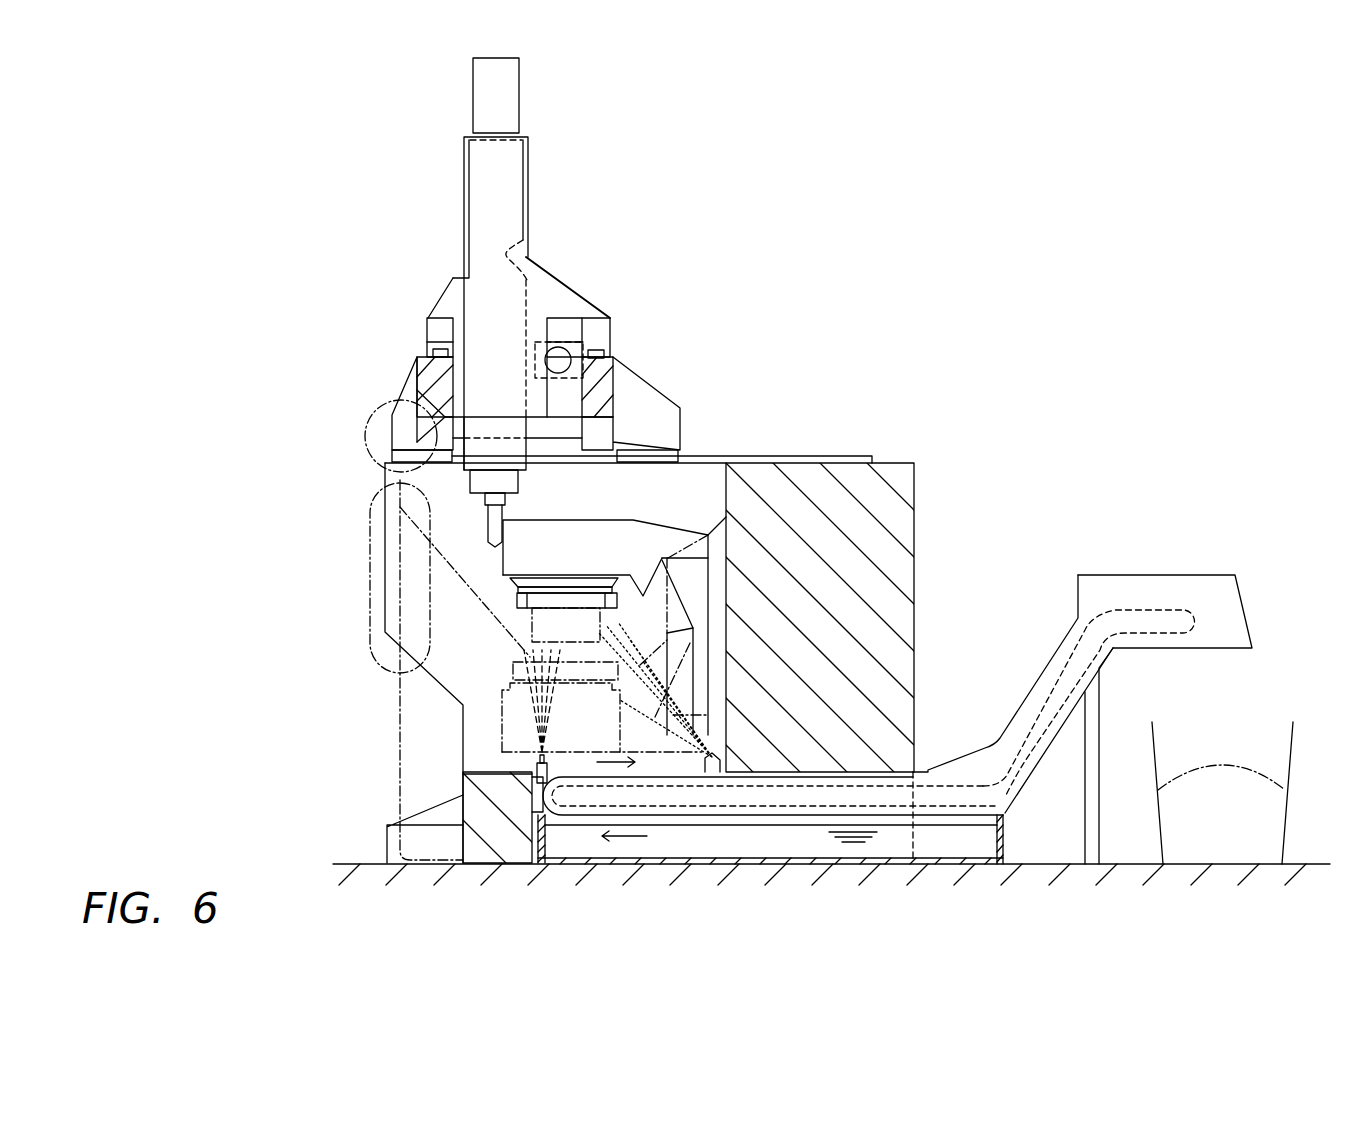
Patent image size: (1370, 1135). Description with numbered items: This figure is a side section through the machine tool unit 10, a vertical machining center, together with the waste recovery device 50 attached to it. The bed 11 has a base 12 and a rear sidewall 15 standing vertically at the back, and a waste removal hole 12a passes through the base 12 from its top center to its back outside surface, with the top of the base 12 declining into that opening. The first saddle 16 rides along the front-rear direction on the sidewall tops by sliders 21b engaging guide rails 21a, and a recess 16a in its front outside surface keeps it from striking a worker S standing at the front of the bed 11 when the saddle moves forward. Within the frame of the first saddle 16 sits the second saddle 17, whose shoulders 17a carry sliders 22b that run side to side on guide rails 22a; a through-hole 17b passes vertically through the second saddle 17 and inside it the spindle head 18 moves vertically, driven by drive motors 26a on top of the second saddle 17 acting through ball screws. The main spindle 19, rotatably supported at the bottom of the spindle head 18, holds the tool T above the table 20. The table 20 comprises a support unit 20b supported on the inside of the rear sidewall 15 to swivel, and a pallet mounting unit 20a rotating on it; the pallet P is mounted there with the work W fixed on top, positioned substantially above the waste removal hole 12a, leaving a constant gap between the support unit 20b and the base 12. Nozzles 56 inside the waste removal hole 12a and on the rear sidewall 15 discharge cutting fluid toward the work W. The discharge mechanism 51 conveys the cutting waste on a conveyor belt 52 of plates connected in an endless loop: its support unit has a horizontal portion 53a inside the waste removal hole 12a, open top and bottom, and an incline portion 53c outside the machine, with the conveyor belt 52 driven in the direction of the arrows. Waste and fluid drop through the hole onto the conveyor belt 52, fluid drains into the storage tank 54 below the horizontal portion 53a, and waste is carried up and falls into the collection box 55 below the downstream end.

The machine tool unit 10 is at (957, 420).
The bed 11 is at (352, 807).
The base 12 is at (468, 847).
The waste removal hole 12a is at (540, 800).
The rear sidewall 15 is at (893, 472).
The first saddle 16 is at (647, 388).
The recess 16a is at (418, 397).
The second saddle 17 is at (513, 192).
The shoulder 17a is at (448, 297).
The through-hole 17b is at (530, 241).
The spindle head 18 is at (528, 165).
The main spindle 19 is at (513, 480).
The table 20 is at (682, 490).
The pallet mounting unit 20a is at (525, 587).
The support unit 20b is at (510, 553).
The guide rails 21a is at (848, 456).
The sliders 21b is at (405, 452).
The guide rails 22a is at (440, 348).
The sliders 22b is at (430, 347).
The drive motors 26a is at (477, 95).
The waste recovery device 50 is at (1133, 527).
The discharge mechanism 51 is at (1042, 574).
The conveyor belt 52 is at (1160, 608).
The horizontal portion 53a is at (800, 778).
The incline portion 53c is at (1042, 677).
The storage tank 54 is at (1005, 853).
The collection box 55 is at (1293, 743).
The nozzles 56 is at (540, 763).
The worker S is at (370, 407).
The tool T is at (493, 522).
The pallet P is at (518, 597).
The work W is at (527, 658).